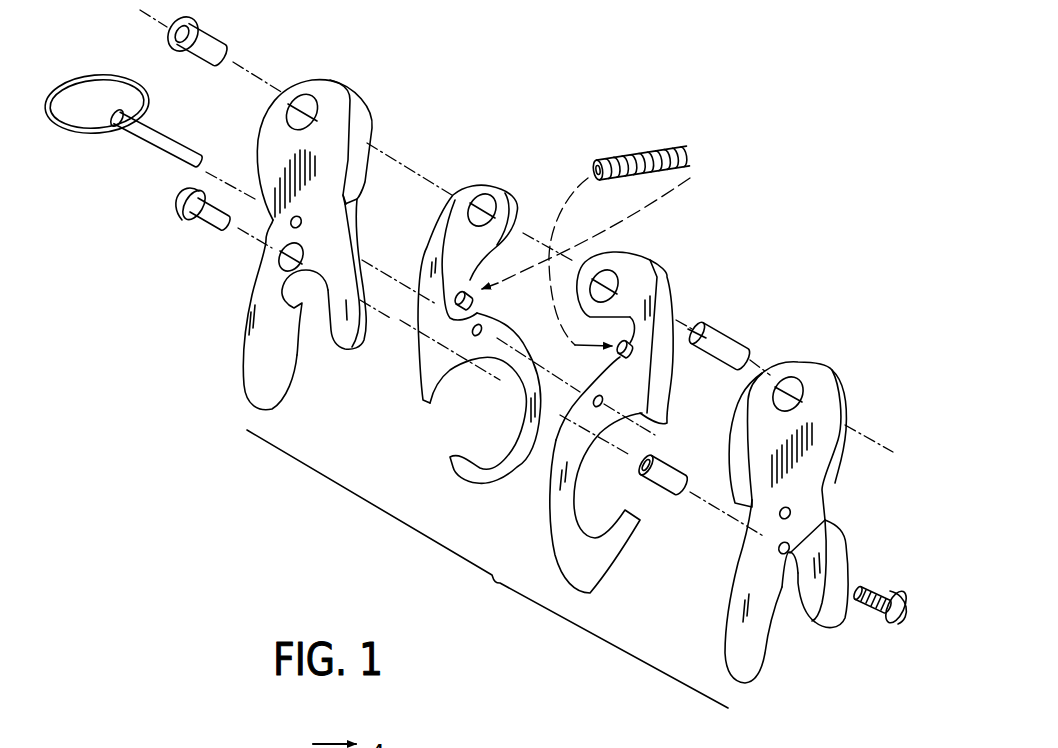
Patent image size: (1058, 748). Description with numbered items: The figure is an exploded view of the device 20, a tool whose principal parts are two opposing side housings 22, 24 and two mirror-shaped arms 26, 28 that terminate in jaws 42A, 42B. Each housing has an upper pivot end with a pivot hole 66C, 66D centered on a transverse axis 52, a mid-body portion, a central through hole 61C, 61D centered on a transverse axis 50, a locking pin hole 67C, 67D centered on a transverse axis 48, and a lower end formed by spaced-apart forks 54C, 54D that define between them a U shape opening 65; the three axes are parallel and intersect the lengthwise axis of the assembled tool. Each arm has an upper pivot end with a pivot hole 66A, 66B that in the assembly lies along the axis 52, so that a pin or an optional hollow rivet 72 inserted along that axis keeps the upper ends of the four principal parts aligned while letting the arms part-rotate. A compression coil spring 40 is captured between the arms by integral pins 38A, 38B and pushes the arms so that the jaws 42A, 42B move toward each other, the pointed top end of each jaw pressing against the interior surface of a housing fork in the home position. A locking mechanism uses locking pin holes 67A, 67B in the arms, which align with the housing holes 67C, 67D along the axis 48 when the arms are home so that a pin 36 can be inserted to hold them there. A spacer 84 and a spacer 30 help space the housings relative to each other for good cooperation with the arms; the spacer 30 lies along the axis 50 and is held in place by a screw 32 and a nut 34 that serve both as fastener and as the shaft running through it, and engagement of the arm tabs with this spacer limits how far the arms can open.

The device 20 is at (487, 569).
The side housing 22 is at (309, 223).
The side housing 24 is at (779, 503).
The arm 26 is at (482, 325).
The arm 28 is at (613, 405).
The spacer 30 is at (660, 482).
The screw 32 is at (912, 604).
The nut 34 is at (185, 214).
The pin 36 is at (170, 150).
The integral pin 38A is at (499, 300).
The integral pin 38B is at (596, 359).
The compression coil spring 40 is at (644, 160).
The jaw 42A is at (464, 462).
The jaw 42B is at (600, 540).
The transverse axis 48 is at (684, 450).
The transverse axis 50 is at (381, 312).
The transverse axis 52 is at (867, 432).
The forks 54C is at (259, 372).
The forks 54D is at (742, 640).
The through hole 61C is at (280, 262).
The through hole 61D is at (777, 551).
The U shape opening 65 is at (308, 335).
The pivot hole 66A is at (484, 200).
The pivot hole 66B is at (609, 278).
The pivot hole 66C is at (304, 104).
The pivot hole 66D is at (793, 385).
The locking pin hole 67A is at (477, 336).
The locking pin hole 67B is at (594, 407).
The locking pin hole 67C is at (302, 220).
The locking pin hole 67D is at (791, 513).
The hollow rivet 72 is at (212, 34).
The spacer 84 is at (728, 338).